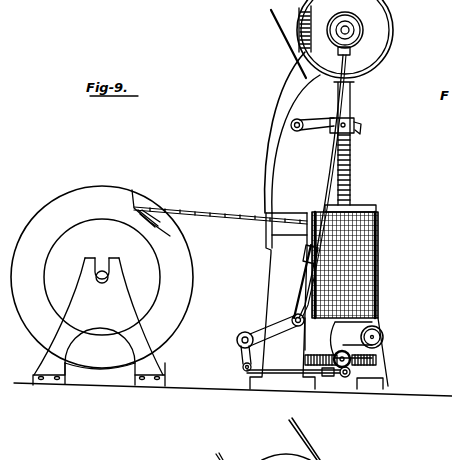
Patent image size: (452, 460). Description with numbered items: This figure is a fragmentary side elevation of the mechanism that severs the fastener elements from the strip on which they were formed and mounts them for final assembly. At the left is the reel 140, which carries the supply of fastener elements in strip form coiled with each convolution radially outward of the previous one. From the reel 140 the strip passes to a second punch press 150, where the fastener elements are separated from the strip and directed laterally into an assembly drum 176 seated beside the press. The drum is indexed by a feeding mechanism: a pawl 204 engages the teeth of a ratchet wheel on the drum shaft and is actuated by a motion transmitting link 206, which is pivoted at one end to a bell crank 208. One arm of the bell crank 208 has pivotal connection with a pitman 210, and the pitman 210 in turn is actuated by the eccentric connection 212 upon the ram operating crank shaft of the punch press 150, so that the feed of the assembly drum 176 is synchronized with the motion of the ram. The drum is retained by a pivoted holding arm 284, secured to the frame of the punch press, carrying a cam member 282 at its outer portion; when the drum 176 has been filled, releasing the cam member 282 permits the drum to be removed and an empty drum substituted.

The reel 140 is at (102, 277).
The second punch press 150 is at (273, 241).
The assembly drum 176 is at (378, 229).
The pawl 204 is at (350, 360).
The motion transmitting link 206 is at (306, 369).
The bell crank 208 is at (272, 328).
The pitman 210 is at (322, 195).
The eccentric connection 212 is at (360, 30).
The cam member 282 is at (360, 130).
The pivoted holding arm 284 is at (307, 121).